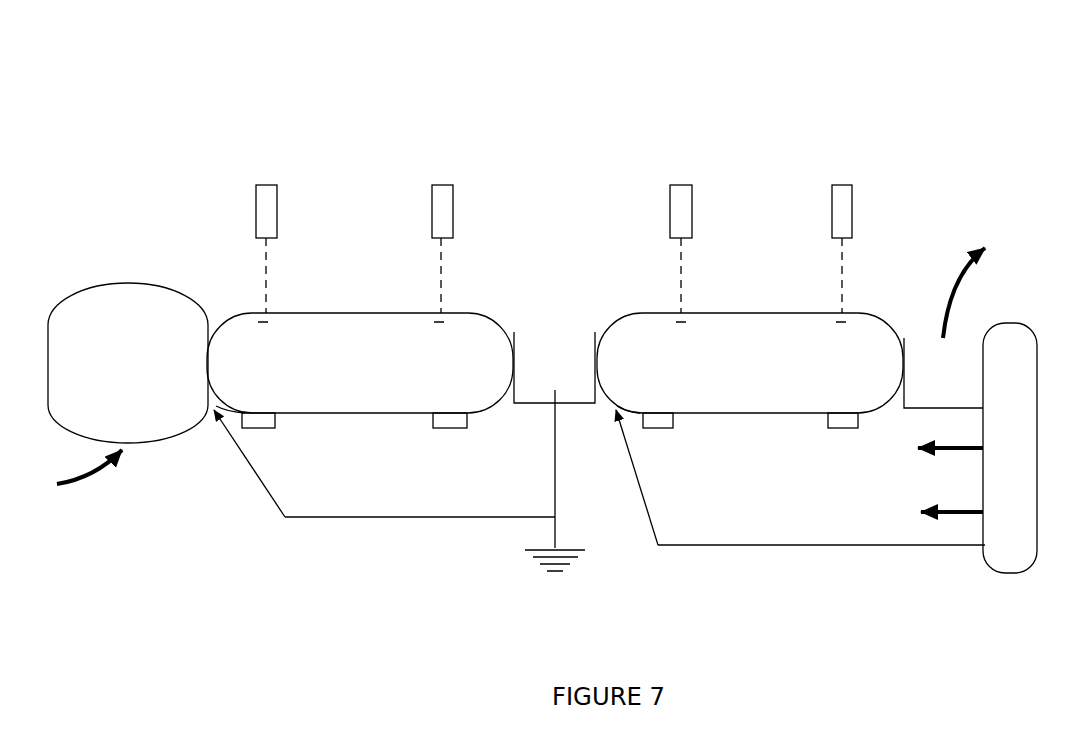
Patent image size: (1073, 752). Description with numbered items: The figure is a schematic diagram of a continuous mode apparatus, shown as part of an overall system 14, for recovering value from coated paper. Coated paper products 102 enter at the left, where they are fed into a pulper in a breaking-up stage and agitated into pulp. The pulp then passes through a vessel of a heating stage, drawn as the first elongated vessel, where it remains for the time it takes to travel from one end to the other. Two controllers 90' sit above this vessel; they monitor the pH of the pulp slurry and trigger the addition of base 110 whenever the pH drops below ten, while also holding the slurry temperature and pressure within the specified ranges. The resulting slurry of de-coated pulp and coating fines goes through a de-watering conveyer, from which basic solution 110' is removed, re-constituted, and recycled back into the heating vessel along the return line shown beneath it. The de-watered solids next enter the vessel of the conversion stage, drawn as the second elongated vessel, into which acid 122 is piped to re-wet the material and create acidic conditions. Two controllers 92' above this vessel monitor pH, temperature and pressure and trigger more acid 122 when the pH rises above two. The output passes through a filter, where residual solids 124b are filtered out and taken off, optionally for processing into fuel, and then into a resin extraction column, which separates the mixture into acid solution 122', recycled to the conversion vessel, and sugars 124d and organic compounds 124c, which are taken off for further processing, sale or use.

The vehicle 14 is at (215, 77).
The coated paper products 102 is at (85, 483).
The base 110 is at (360, 279).
The controllers 90' is at (354, 199).
The basic solution 110' is at (384, 507).
The acid 122 is at (750, 283).
The controllers 92' is at (761, 202).
The acid solution 122' is at (800, 525).
The residual solids 124b is at (997, 284).
The sugars 124d is at (916, 448).
The organic compounds 124c is at (922, 512).